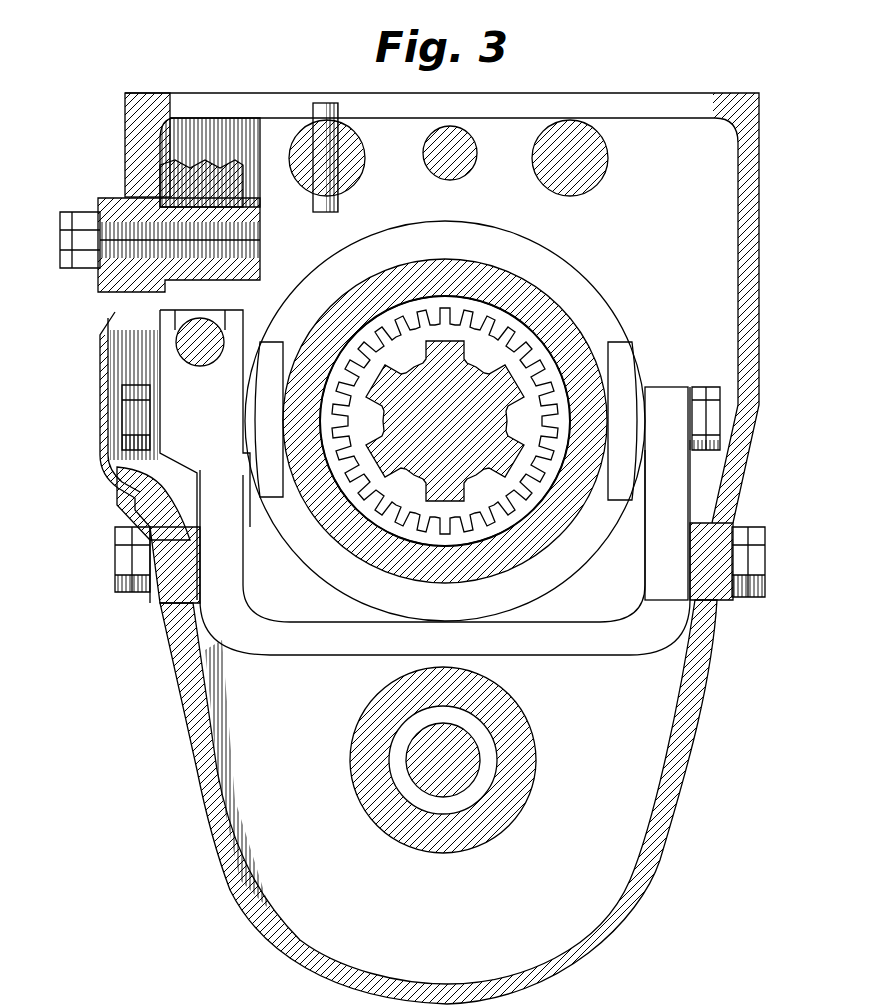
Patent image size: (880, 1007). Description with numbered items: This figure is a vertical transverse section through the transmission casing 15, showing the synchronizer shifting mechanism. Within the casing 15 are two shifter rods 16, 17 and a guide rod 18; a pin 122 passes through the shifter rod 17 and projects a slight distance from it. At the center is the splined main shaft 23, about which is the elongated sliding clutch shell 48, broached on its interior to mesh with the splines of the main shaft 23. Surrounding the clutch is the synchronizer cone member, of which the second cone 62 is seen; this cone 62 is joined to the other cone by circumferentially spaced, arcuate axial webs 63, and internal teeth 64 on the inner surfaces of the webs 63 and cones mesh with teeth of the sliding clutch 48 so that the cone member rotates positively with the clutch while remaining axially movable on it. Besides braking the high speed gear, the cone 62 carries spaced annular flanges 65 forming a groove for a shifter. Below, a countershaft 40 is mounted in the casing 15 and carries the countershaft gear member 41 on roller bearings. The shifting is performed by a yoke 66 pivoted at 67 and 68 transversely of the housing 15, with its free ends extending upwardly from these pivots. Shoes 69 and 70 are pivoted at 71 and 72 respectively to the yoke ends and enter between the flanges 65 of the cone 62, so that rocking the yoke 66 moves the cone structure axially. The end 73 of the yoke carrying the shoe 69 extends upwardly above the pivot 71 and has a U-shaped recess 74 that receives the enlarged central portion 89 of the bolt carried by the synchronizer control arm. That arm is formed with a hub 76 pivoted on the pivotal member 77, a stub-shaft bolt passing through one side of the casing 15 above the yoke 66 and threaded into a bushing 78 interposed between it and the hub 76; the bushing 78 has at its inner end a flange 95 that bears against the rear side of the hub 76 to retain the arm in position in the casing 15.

The casing 15 is at (650, 880).
The shifter rod 16 is at (590, 152).
The shifter rod 17 is at (345, 172).
The guide rod 18 is at (475, 163).
The pin 122 is at (338, 205).
The main shaft 23 is at (470, 378).
The countershaft 40 is at (460, 780).
The countershaft gear member 41 is at (505, 708).
The sliding clutch shell 48 is at (425, 470).
The second cone 62 is at (585, 300).
The axial webs 63 is at (370, 530).
The internal teeth 64 is at (330, 500).
The annular flanges 65 is at (528, 255).
The yoke 66 is at (290, 645).
The pivot 67 is at (150, 587).
The pivot 68 is at (730, 600).
The shoe 69 is at (270, 345).
The shoe 70 is at (618, 358).
The pivot 71 is at (130, 418).
The pivot 72 is at (715, 428).
The yoke end 73 is at (205, 455).
The U-shaped recess 74 is at (212, 365).
The hub 76 is at (230, 180).
The pivotal member 77 is at (70, 215).
The bushing 78 is at (258, 212).
The central portion 89 is at (205, 322).
The flange 95 is at (258, 290).